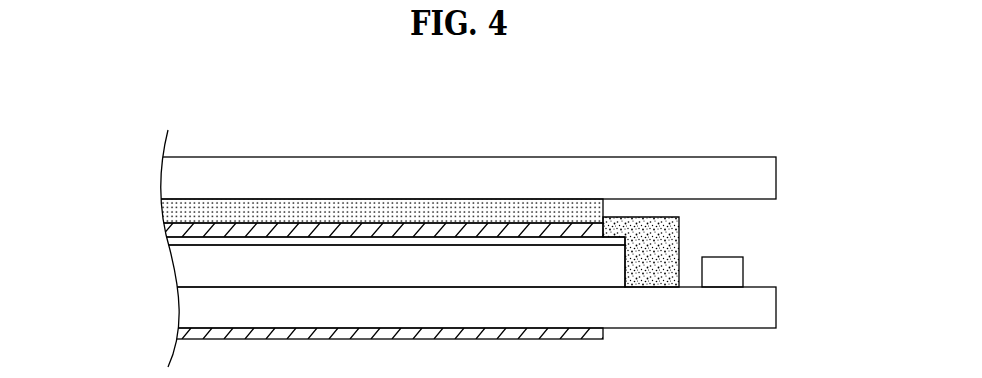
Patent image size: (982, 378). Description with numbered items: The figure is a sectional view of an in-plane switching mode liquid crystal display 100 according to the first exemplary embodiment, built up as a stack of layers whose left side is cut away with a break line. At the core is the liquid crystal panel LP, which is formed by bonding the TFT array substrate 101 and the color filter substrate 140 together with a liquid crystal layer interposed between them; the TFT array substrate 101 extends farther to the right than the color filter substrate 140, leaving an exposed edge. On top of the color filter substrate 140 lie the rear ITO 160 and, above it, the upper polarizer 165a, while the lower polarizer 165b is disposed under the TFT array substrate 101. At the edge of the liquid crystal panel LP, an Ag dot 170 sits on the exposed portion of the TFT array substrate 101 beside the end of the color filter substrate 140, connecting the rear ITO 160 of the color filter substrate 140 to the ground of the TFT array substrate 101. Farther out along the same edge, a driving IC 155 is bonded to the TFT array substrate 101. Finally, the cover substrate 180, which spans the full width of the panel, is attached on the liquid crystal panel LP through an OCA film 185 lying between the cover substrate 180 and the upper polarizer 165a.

The in-plane switching mode liquid crystal display 100 is at (240, 106).
The cover substrate 180 is at (164, 175).
The OCA film 185 is at (160, 210).
The upper polarizer 165a is at (170, 231).
The rear ITO 160 is at (172, 240).
The liquid crystal panel LP is at (96, 265).
The color filter substrate 140 is at (178, 268).
The TFT array substrate 101 is at (182, 300).
The lower polarizer 165b is at (178, 332).
The Ag dot 170 is at (668, 240).
The driving IC 155 is at (745, 271).